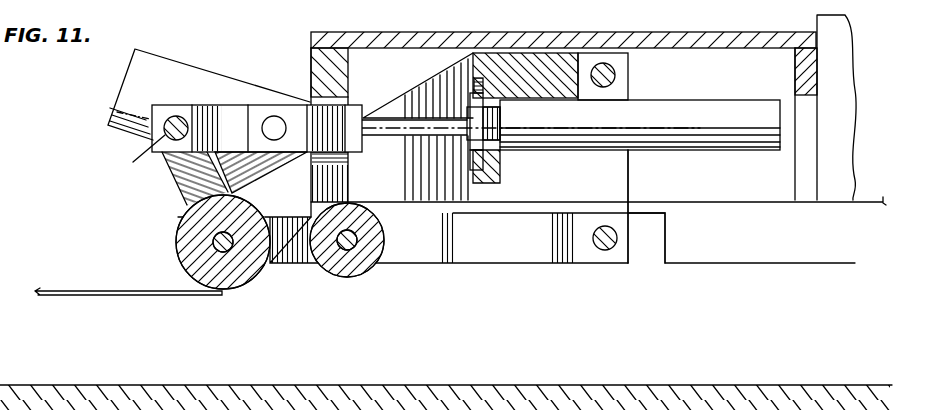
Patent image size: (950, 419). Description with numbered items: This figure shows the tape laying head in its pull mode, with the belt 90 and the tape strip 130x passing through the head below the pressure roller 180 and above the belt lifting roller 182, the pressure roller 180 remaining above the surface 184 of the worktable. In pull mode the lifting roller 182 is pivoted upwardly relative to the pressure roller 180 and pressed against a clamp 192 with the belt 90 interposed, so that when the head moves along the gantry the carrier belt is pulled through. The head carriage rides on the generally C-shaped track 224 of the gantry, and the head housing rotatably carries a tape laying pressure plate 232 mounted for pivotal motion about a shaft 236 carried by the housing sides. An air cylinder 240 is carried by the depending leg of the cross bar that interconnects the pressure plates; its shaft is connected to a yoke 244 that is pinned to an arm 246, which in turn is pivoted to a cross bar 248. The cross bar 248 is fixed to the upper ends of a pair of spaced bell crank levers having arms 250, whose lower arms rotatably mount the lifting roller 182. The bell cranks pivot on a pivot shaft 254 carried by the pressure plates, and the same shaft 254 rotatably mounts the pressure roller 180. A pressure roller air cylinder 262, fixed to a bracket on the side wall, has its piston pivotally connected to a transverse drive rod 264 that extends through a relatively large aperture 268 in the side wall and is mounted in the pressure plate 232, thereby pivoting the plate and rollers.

The belt 90 is at (425, 202).
The tape strip 130x is at (72, 297).
The pressure roller 180 is at (180, 232).
The belt lifting roller 182 is at (356, 273).
The surface of worktable 184 is at (333, 384).
The clamp 192 is at (350, 168).
The C-shaped track 224 is at (450, 31).
The tape laying pressure plate 232 is at (630, 181).
The shaft 236 is at (616, 74).
The air cylinder 240 is at (750, 100).
The yoke 244 is at (305, 105).
The arm 246 is at (205, 105).
The cross bar 248 is at (130, 153).
The bell crank arm 250 is at (178, 186).
The pivot shaft 254 is at (213, 242).
The pressure roller air cylinder 262 is at (113, 110).
The transverse drive rod 264 is at (607, 250).
The aperture 268 is at (667, 236).